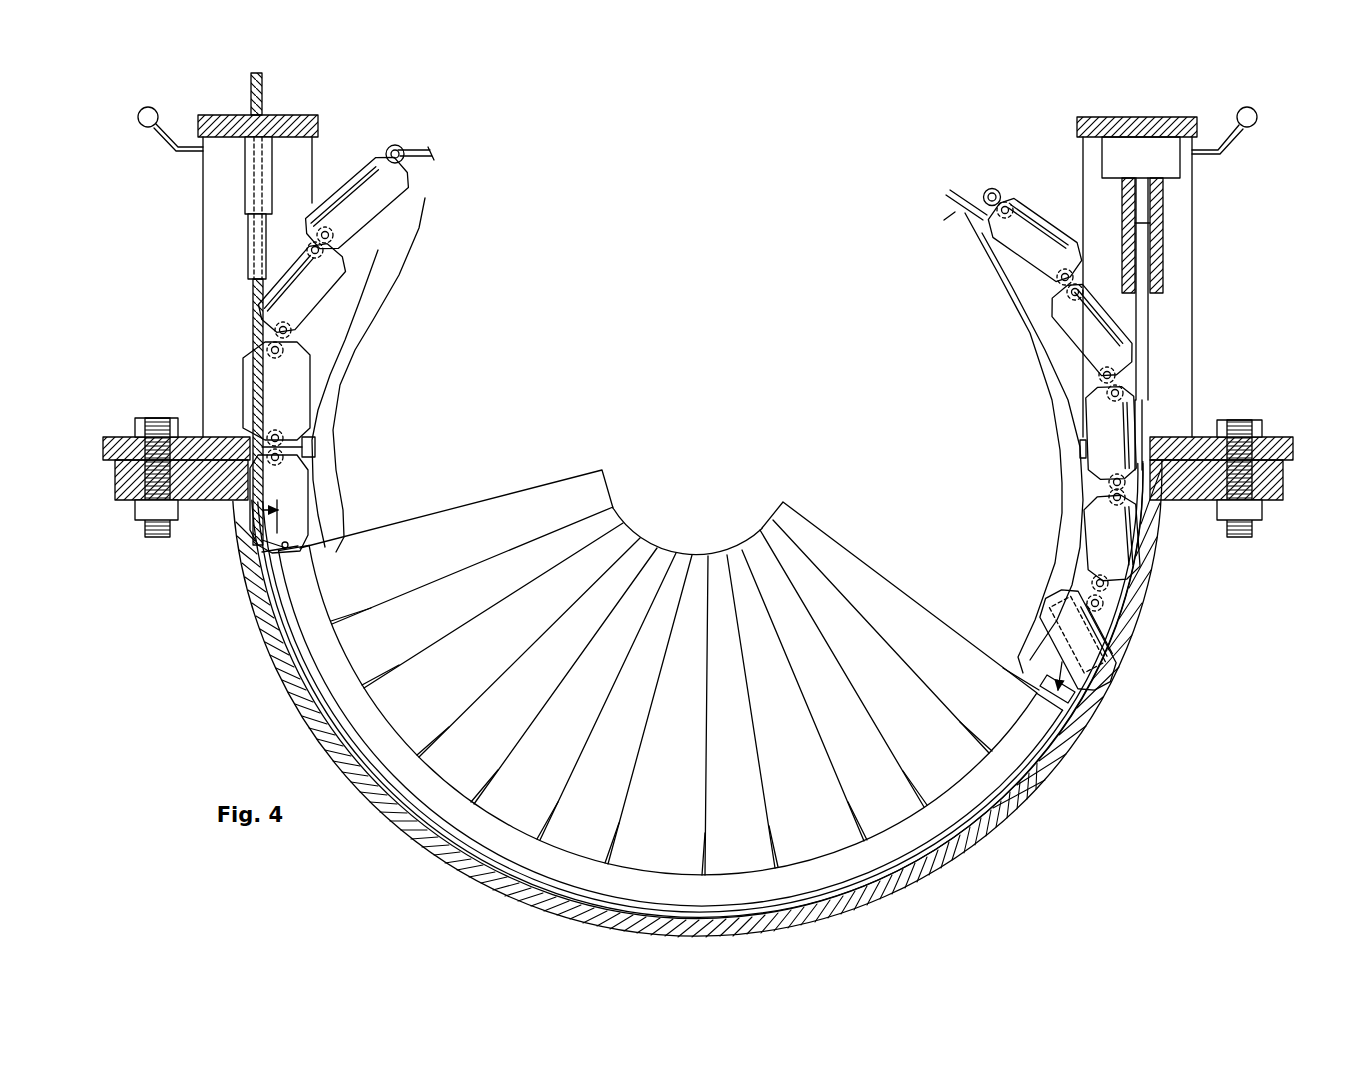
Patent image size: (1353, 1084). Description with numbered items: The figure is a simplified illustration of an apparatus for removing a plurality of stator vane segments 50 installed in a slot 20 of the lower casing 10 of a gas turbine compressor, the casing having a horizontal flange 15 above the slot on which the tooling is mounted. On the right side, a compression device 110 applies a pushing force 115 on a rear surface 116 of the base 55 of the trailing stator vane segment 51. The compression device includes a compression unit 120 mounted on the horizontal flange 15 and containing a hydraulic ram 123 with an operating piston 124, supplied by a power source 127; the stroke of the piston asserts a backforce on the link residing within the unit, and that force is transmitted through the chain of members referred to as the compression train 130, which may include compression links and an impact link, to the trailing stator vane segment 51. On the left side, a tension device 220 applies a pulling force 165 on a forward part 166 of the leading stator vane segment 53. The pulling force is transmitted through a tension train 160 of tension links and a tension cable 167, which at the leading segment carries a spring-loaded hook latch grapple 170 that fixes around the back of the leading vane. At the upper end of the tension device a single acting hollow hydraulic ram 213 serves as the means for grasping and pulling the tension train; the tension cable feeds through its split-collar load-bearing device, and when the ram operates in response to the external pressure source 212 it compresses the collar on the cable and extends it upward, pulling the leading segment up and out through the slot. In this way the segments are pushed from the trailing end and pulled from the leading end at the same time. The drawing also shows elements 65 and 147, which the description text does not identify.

The lower casing 10 is at (305, 712).
The horizontal flange 15 is at (115, 490).
The slot 20 is at (932, 822).
The stator vane segments 50 is at (625, 503).
The trailing stator vane segment 51 is at (852, 540).
The leading stator vane segment 53 is at (524, 488).
The base 55 is at (330, 684).
The intermediate layer 65 is at (400, 824).
The compression device 110 is at (1110, 405).
The pushing force 115 is at (1100, 640).
The rear surface 116 is at (1030, 665).
The compression unit 120 is at (1205, 190).
The hydraulic ram 123 is at (1083, 153).
The operating piston 124 is at (1150, 320).
The power source 127 is at (1256, 117).
The compression train 130 is at (1055, 479).
The cable 147 is at (950, 213).
The tension train 160 is at (352, 358).
The pulling force 165 is at (250, 535).
The forward part 166 is at (262, 552).
The tension cable 167 is at (262, 90).
The spring-loaded hook latch grapple 170 is at (318, 126).
The external power source 212 is at (138, 112).
The single acting hollow hydraulic ram 213 is at (245, 190).
The tension device 220 is at (250, 333).